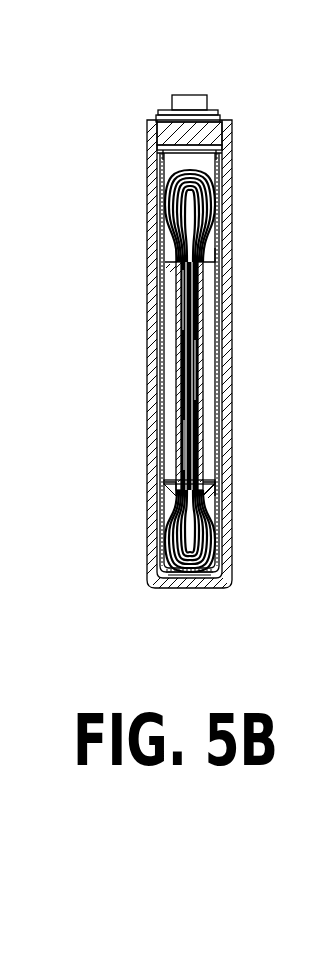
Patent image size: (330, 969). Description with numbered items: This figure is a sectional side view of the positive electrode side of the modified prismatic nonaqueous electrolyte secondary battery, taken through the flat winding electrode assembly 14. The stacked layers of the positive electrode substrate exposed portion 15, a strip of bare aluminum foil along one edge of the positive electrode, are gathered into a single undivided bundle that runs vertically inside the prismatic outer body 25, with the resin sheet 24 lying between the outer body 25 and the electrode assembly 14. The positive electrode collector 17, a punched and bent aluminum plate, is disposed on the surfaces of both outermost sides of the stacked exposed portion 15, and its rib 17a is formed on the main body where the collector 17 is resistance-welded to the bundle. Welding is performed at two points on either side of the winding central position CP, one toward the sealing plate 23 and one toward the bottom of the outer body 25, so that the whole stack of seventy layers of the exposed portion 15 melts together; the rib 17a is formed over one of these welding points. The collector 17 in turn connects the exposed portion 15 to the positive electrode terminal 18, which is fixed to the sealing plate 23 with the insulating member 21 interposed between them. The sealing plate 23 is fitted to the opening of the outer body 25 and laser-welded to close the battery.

The positive electrode terminal 18 is at (178, 100).
The insulating member 21 is at (218, 118).
The sealing plate 23 is at (202, 133).
The positive electrode substrate exposed portion 15 is at (170, 272).
The positive electrode collector 17 is at (207, 270).
The rib 17a is at (213, 313).
The winding central position CP is at (268, 375).
The flat winding electrode assembly 14 is at (167, 503).
The prismatic outer body 25 is at (156, 528).
The resin sheet 24 is at (217, 558).